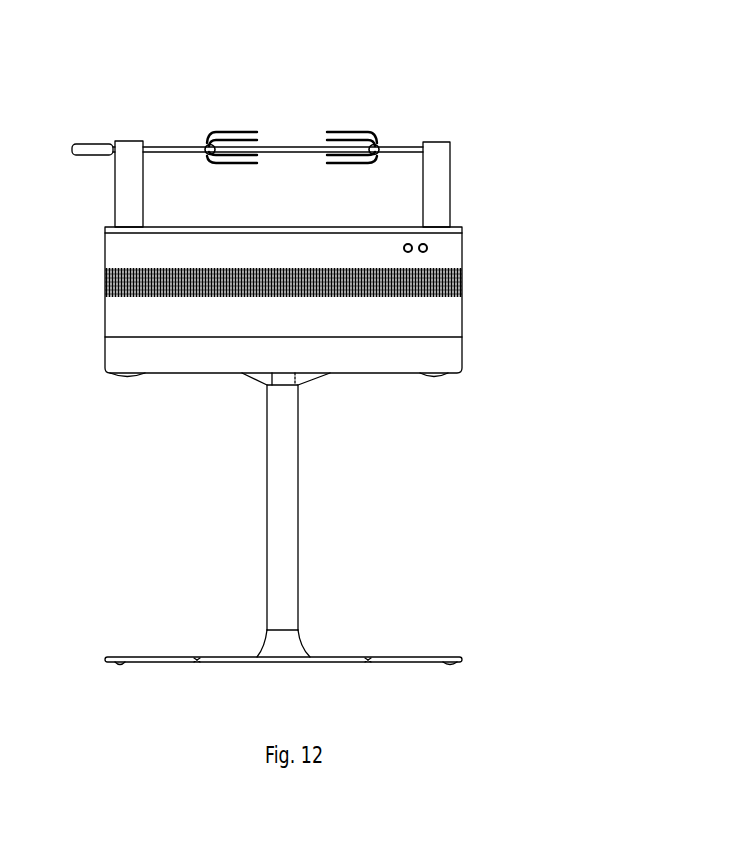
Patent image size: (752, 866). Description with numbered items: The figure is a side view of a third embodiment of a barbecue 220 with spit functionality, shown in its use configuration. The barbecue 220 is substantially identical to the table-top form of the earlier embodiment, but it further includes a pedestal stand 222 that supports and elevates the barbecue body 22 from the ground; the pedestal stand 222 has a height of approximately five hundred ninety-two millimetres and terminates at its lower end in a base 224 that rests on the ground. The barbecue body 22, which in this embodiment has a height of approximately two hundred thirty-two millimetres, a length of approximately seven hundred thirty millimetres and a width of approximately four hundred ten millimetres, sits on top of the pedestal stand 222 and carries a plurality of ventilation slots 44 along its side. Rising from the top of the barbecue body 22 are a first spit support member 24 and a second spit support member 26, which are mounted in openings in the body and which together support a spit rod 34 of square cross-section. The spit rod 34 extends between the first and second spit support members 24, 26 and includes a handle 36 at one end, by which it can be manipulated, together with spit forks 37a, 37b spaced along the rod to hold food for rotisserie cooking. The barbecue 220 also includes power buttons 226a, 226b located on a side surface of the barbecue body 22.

The barbecue 220 is at (525, 113).
The barbecue body 22 is at (420, 318).
The ventilation slots 44 is at (105, 283).
The first spit support member 24 is at (128, 185).
The second spit support member 26 is at (440, 180).
The spit rod 34 is at (298, 148).
The handle 36 is at (93, 148).
The spit fork 37a is at (212, 133).
The spit fork 37b is at (367, 130).
The power button 226a is at (430, 248).
The power button 226b is at (413, 253).
The pedestal stand 222 is at (292, 483).
The base 224 is at (397, 657).